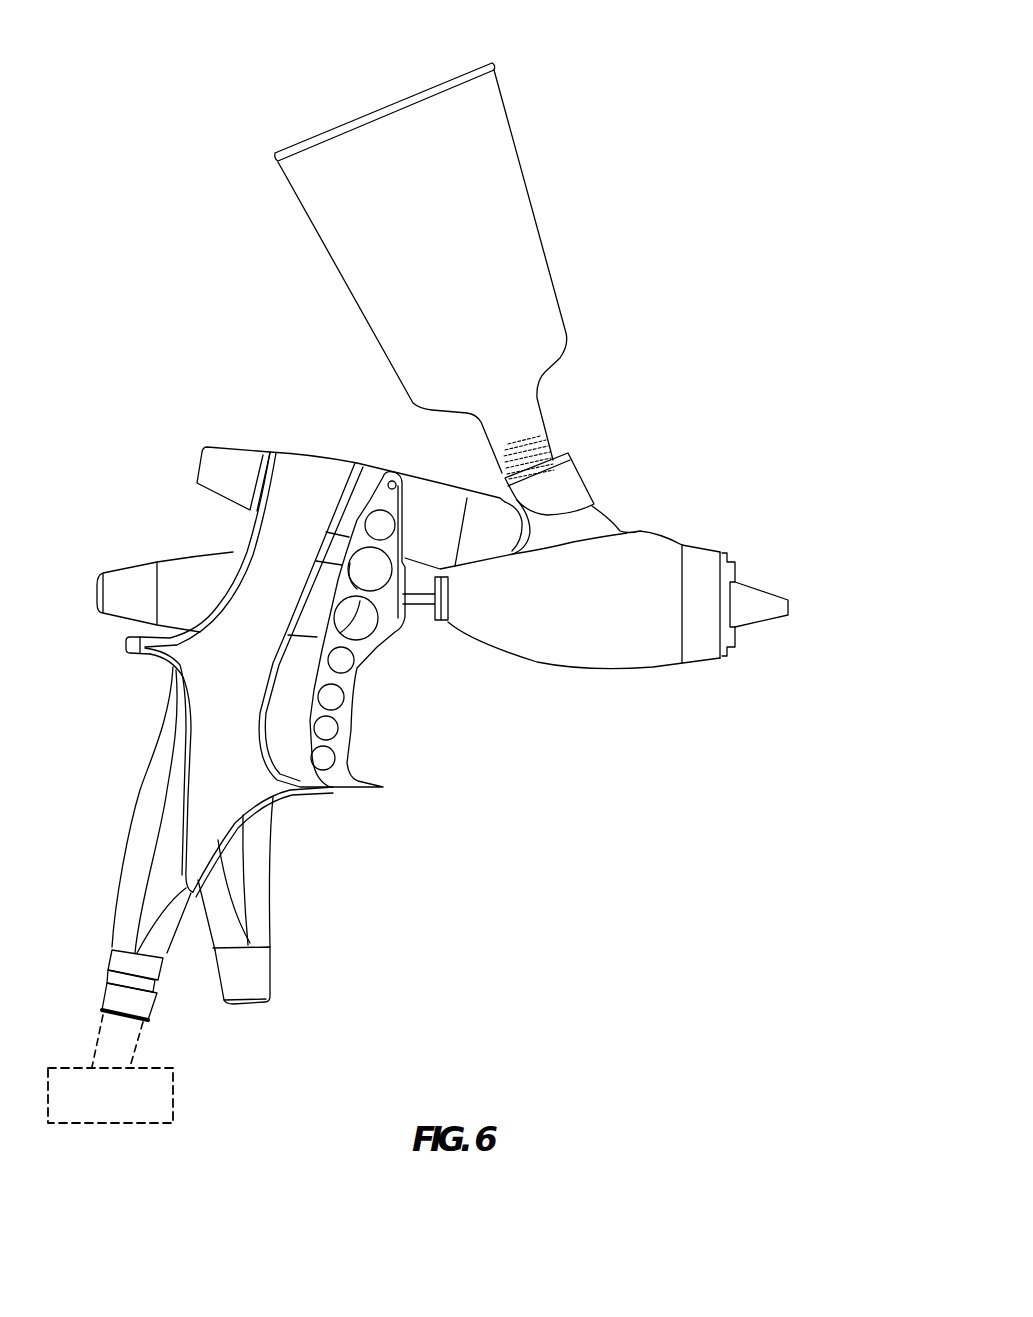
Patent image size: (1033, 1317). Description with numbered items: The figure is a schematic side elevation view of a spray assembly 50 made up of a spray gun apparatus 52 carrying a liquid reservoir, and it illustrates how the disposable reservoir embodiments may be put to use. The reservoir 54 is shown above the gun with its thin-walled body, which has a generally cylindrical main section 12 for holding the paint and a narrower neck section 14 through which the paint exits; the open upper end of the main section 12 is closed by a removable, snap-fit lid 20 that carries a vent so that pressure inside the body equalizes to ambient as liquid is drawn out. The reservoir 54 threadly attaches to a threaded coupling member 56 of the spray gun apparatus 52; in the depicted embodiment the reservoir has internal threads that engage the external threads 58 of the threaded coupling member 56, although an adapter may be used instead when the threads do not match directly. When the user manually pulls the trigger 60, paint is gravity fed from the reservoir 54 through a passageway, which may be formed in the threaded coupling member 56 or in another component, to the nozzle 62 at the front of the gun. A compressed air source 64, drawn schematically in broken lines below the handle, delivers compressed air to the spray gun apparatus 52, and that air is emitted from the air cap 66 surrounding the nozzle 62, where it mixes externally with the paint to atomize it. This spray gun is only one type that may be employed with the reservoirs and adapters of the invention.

The main section 12 is at (548, 272).
The neck section 14 is at (496, 470).
The lid 20 is at (494, 63).
The spray assembly 50 is at (758, 437).
The spray gun apparatus 52 is at (317, 490).
The reservoir 54 is at (500, 158).
The threaded coupling member 56 is at (531, 446).
The external threads 58 is at (560, 442).
The trigger 60 is at (350, 737).
The nozzle 62 is at (796, 594).
The compressed air source 64 is at (175, 1102).
The air cap 66 is at (760, 612).